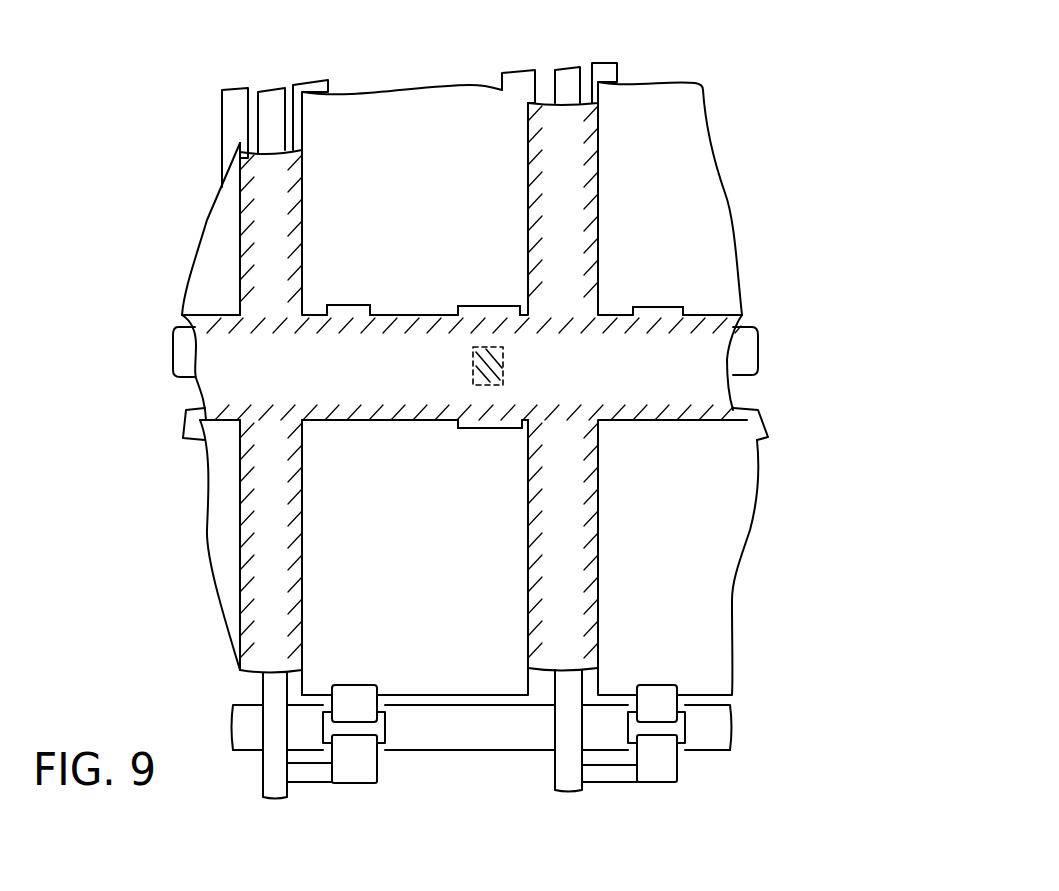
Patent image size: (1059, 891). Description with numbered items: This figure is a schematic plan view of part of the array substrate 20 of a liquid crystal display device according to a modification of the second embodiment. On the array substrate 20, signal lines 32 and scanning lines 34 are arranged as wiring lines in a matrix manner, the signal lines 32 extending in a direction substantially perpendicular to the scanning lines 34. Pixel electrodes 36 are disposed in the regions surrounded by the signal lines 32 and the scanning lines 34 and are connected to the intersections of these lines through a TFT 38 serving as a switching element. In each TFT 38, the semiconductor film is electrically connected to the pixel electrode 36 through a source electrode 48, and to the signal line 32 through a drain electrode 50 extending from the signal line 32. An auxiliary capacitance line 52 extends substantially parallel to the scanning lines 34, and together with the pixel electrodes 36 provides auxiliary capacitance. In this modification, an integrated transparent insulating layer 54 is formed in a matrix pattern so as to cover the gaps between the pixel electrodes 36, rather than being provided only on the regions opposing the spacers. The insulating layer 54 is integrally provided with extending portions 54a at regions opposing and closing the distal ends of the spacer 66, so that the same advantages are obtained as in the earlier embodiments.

The array substrate 20 is at (670, 60).
The signal lines 32 is at (272, 95).
The scanning lines 34 is at (745, 356).
The pixel electrodes 36 is at (405, 118).
The TFT 38 is at (378, 673).
The source electrode 48 is at (348, 690).
The drain electrode 50 is at (375, 766).
The auxiliary capacitance line 52 is at (310, 80).
The transparent insulating layer 54 is at (395, 378).
The extending portions 54a is at (472, 302).
The spacer 66 is at (505, 363).